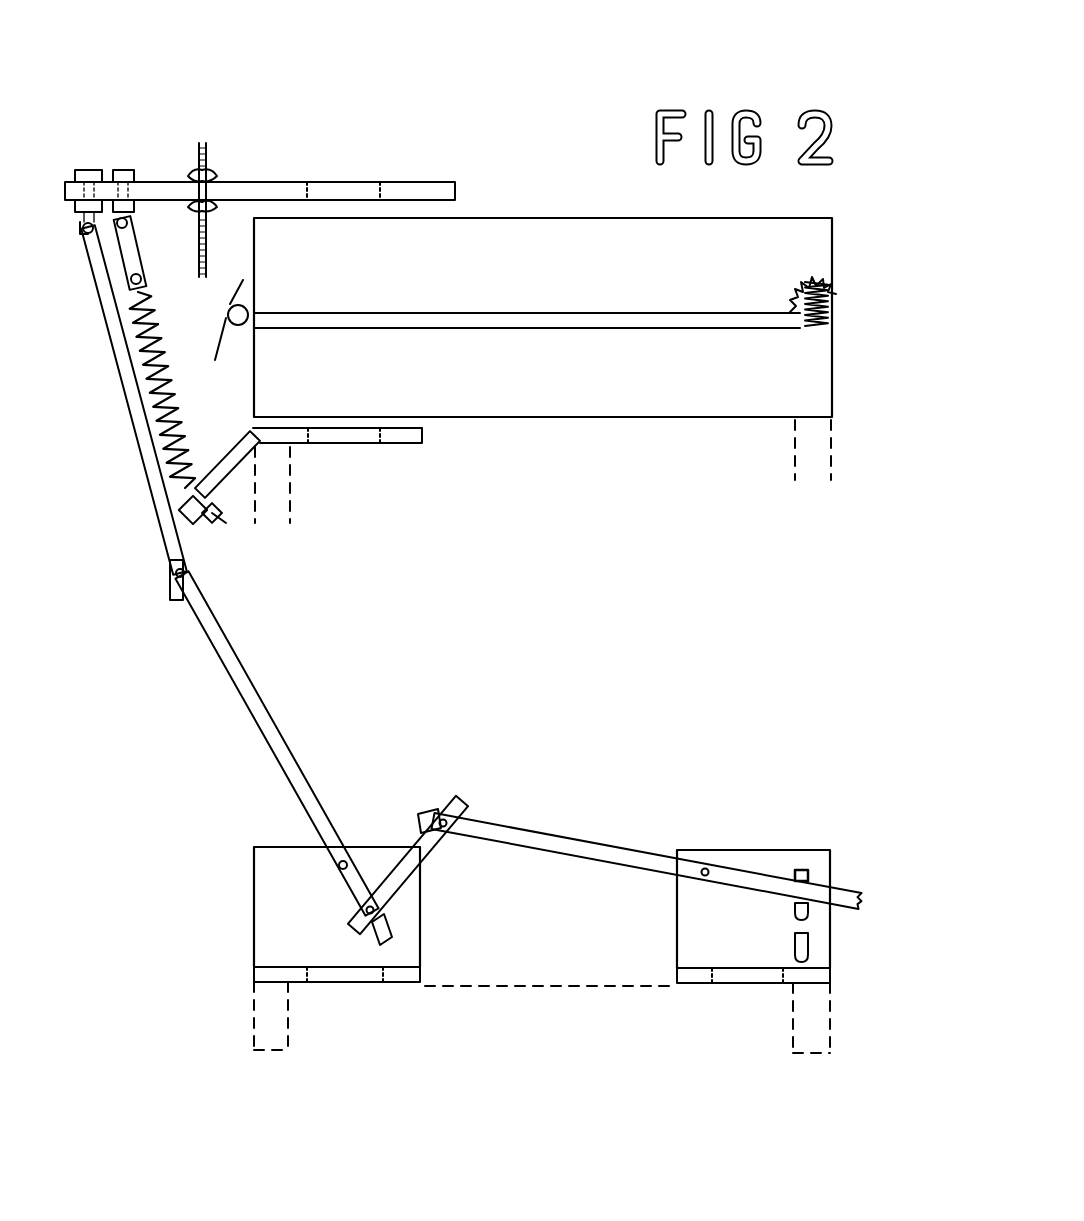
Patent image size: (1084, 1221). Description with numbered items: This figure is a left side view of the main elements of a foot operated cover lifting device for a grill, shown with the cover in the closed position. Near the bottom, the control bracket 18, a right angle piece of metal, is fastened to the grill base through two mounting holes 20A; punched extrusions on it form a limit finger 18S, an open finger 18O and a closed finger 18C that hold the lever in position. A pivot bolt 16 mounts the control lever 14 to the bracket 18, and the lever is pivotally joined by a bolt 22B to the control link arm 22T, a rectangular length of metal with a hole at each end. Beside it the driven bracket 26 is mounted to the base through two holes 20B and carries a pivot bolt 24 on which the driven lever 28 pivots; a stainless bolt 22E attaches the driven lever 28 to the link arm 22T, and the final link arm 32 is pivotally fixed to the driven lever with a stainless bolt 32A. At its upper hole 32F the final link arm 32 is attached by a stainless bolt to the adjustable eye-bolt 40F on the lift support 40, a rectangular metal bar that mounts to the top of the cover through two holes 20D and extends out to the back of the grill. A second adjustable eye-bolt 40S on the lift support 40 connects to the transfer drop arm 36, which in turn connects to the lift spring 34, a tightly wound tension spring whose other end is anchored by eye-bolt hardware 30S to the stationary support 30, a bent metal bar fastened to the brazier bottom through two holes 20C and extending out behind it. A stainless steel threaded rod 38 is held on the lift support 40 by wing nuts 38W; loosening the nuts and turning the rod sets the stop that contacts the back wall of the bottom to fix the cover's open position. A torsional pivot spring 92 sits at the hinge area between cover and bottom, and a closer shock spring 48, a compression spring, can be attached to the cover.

The control lever 14 is at (551, 823).
The pivot bolt 16 is at (705, 876).
The control bracket 18 is at (708, 907).
The closed finger 18C is at (810, 872).
The open finger 18O is at (793, 908).
The limit finger 18S is at (810, 937).
The mounting holes 20A is at (783, 983).
The mounting holes 20B is at (307, 982).
The mounting holes 20C is at (383, 445).
The mounting holes 20D is at (307, 182).
The bolt 22B is at (440, 812).
The stainless bolt 22E is at (360, 915).
The control link arm 22T is at (400, 877).
The pivot bolt 24 is at (338, 858).
The driven bracket 26 is at (305, 895).
The driven lever 28 is at (232, 665).
The stationary support 30 is at (332, 435).
The eye-bolt hardware 30S is at (187, 498).
The final link arm 32 is at (107, 290).
The stainless bolt 32A is at (184, 573).
The hole 32F is at (85, 233).
The lift spring 34 is at (150, 385).
The transfer drop arm 36 is at (127, 245).
The threaded rod 38 is at (203, 158).
The wing nuts 38W is at (212, 175).
The lift support 40 is at (257, 192).
The adjustable eye-bolt 40F is at (93, 172).
The adjustable eye-bolt 40S is at (122, 163).
The closer shock spring 48 is at (830, 303).
The pivot spring 92 is at (253, 325).